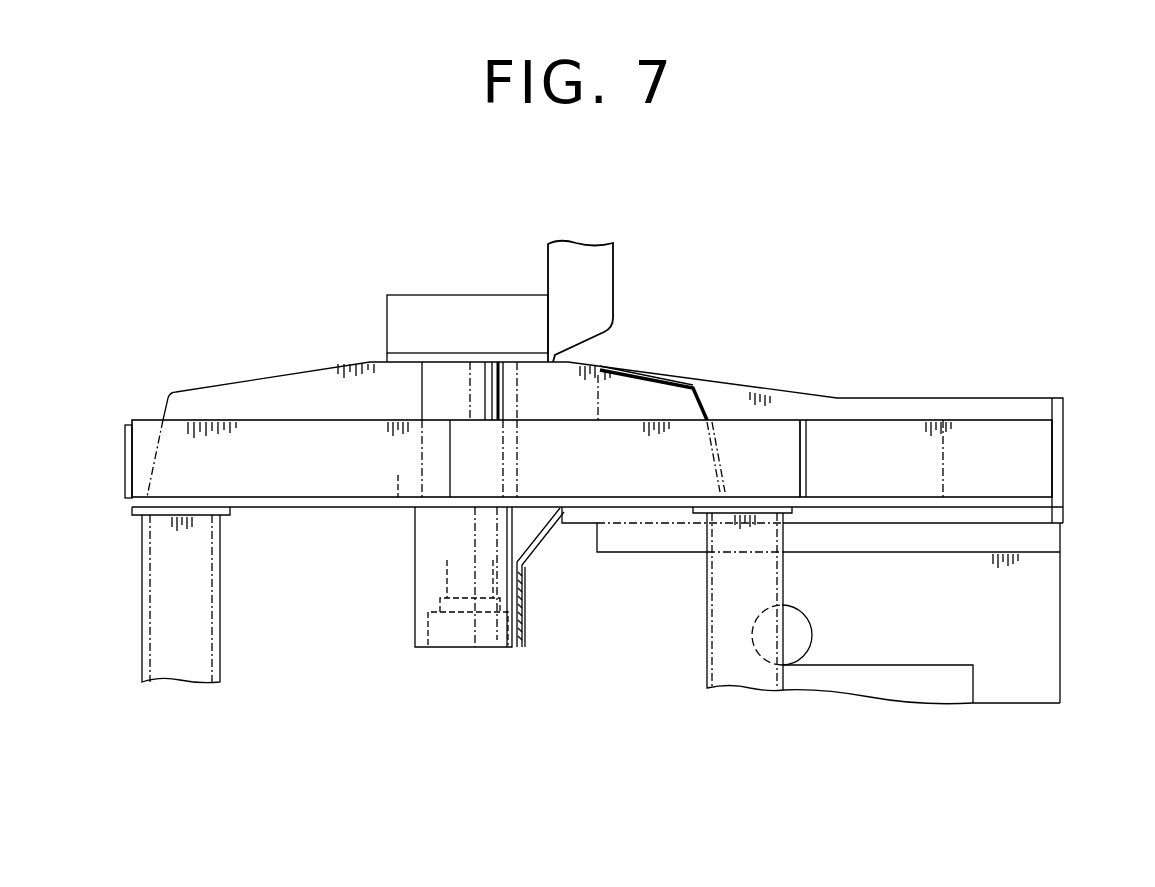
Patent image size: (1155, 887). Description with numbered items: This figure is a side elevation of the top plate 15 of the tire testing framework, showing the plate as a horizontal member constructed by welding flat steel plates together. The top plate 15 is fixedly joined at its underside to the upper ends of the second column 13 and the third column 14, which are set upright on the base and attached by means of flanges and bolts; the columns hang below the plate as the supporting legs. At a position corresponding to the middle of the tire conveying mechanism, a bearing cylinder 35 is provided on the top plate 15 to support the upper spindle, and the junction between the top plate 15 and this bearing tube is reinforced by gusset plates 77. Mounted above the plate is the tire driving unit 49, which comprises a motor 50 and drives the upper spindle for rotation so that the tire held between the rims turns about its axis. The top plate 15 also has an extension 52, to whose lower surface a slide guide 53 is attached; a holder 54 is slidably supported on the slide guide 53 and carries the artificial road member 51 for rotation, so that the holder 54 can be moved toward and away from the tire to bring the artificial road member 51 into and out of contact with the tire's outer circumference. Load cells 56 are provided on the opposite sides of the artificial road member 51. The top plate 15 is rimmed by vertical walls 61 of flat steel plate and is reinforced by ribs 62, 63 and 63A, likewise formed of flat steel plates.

The second column 13 is at (727, 652).
The third column 14 is at (165, 610).
The top plate 15 is at (298, 464).
The bearing cylinder 35 is at (523, 613).
The tire driving unit 49 is at (481, 292).
The motor 50 is at (602, 278).
The artificial road member 51 is at (925, 685).
The extension 52 is at (1030, 452).
The slide guide 53 is at (1035, 517).
The holder 54 is at (1050, 617).
The load cells 56 is at (795, 645).
The vertical walls 61 is at (785, 430).
The rib 62 is at (973, 407).
The rib 63 is at (648, 392).
The rib 63A is at (292, 373).
The gusset plates 77 is at (548, 537).